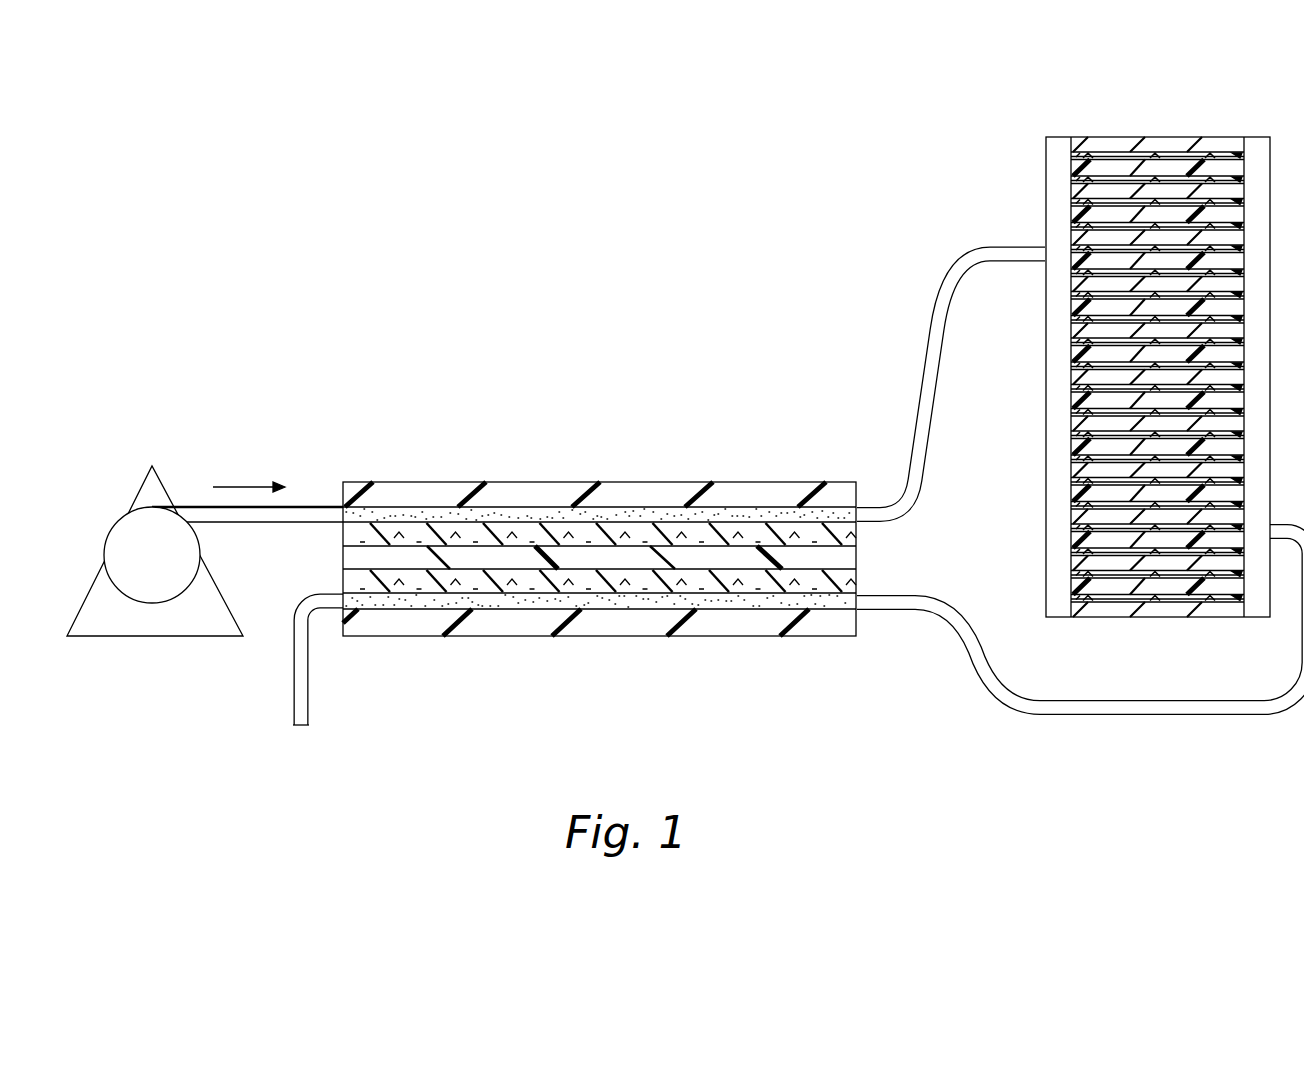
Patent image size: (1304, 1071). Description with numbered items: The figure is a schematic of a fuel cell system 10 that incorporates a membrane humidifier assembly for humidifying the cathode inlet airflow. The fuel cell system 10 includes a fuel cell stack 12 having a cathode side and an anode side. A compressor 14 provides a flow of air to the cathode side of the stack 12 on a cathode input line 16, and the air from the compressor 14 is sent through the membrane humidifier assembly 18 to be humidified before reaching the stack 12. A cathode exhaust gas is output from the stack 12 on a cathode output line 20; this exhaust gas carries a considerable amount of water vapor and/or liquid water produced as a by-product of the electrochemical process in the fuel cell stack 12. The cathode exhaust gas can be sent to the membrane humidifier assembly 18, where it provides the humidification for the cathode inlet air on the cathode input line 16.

The fuel cell system 10 is at (565, 225).
The fuel cell stack 12 is at (1110, 138).
The compressor 14 is at (130, 512).
The cathode input line 16 is at (930, 327).
The membrane humidifier assembly 18 is at (482, 480).
The cathode output line 20 is at (1092, 713).